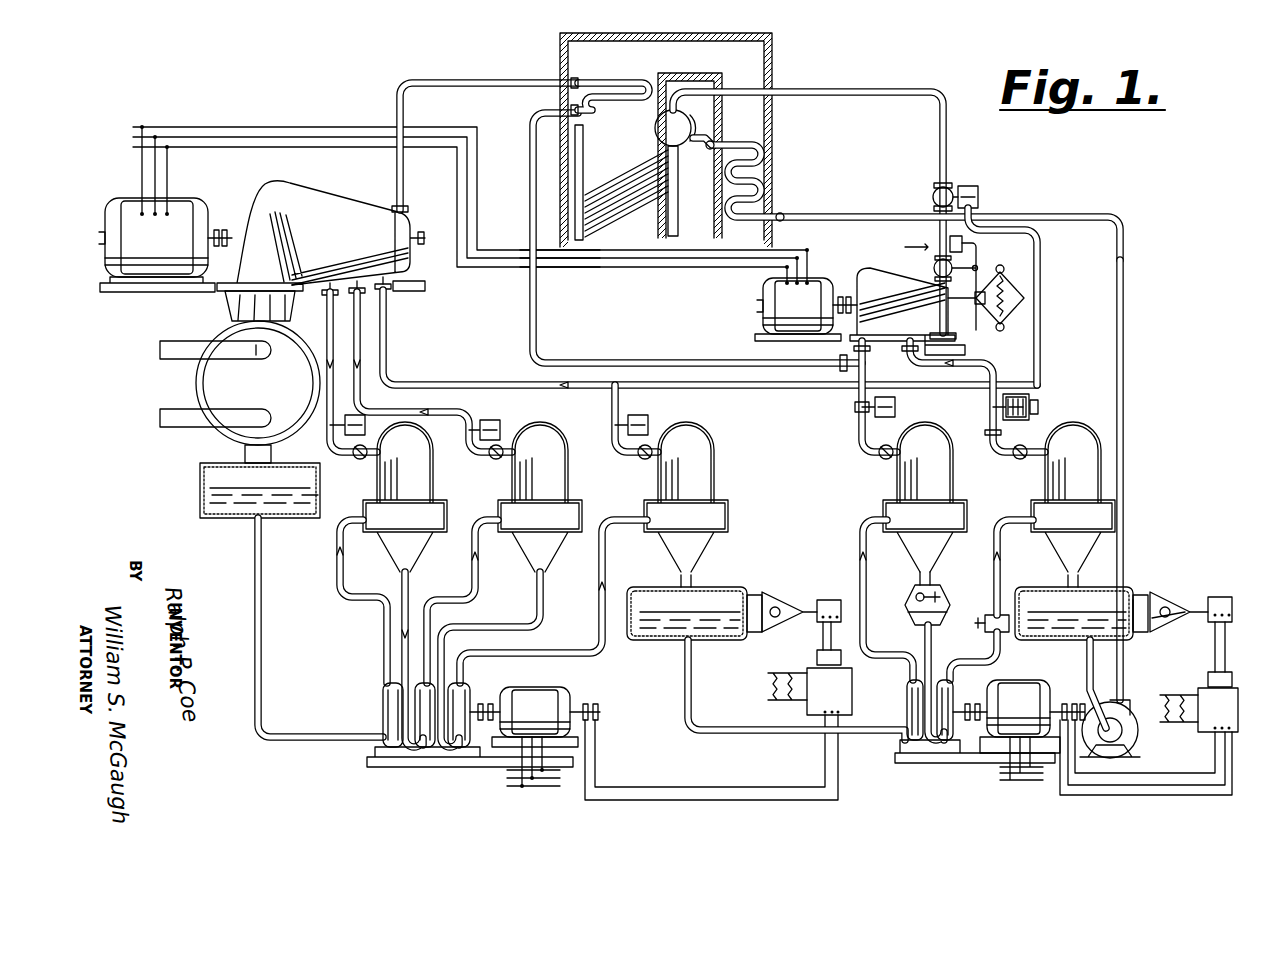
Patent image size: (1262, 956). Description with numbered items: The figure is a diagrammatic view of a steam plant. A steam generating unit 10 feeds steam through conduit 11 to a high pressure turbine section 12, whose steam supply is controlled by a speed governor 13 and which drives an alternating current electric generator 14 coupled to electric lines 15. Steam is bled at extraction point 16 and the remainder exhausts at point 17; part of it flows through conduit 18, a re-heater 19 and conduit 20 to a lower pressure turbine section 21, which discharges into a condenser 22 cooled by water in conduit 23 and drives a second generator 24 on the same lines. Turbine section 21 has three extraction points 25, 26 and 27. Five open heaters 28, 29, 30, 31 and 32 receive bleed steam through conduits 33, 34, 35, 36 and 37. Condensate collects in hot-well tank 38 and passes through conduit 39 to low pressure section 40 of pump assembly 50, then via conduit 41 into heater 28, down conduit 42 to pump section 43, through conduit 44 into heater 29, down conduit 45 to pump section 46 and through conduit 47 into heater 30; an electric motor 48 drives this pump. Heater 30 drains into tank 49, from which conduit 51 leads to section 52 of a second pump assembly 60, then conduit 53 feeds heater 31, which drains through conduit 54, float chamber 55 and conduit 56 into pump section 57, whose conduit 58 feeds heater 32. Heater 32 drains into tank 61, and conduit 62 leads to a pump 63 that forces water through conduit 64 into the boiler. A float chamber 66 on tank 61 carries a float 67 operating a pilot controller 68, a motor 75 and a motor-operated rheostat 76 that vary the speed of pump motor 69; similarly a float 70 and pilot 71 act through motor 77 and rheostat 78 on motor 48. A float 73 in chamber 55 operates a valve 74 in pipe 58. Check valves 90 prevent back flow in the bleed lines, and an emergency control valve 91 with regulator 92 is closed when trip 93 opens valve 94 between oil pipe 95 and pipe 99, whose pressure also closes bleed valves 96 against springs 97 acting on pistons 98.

The steam generating unit 10 is at (666, 140).
The conduit 11 is at (840, 91).
The high pressure turbine section 12 is at (866, 280).
The speed governor 13 is at (1006, 290).
The alternating current electric generator 14 is at (785, 308).
The electric lines 15 is at (650, 258).
The steam extraction point 16 is at (912, 330).
The high pressure turbine exhaust point 17 is at (866, 330).
The conduit 18 is at (655, 362).
The re-heater 19 is at (610, 81).
The conduit 20 is at (448, 82).
The lower pressure turbine section 21 is at (322, 205).
The condenser 22 is at (200, 372).
The conduit 23 is at (185, 425).
The alternating current electric generator 24 is at (180, 198).
The steam extraction point 25 is at (384, 276).
The steam extraction point 26 is at (356, 280).
The steam extraction point 27 is at (328, 282).
The open heater 28 is at (435, 480).
The open heater 29 is at (568, 475).
The open heater 30 is at (716, 468).
The open heater 31 is at (953, 472).
The open heater 32 is at (1090, 425).
The conduit 33 is at (975, 362).
The conduit 34 is at (865, 447).
The conduit 35 is at (412, 390).
The conduit 36 is at (362, 355).
The conduit 37 is at (335, 335).
The hot-well tank 38 is at (200, 487).
The conduit 39 is at (266, 652).
The low pressure pump section 40 is at (383, 700).
The conduit 41 is at (337, 578).
The conduit 42 is at (400, 583).
The pump section 43 is at (428, 748).
The conduit 44 is at (436, 598).
The conduit 45 is at (492, 626).
The pump section 46 is at (465, 750).
The conduit 47 is at (560, 652).
The electric motor 48 is at (545, 700).
The tank 49 is at (725, 586).
The pump assembly 50 is at (435, 758).
The conduit 51 is at (684, 688).
The pump section 52 is at (906, 703).
The conduit 53 is at (860, 568).
The conduit 54 is at (932, 578).
The float chamber 55 is at (915, 605).
The conduit 56 is at (935, 640).
The pump section 57 is at (950, 742).
The conduit 58 is at (1000, 652).
The second pump assembly 60 is at (935, 763).
The tank 61 is at (1038, 590).
The conduit 62 is at (1125, 360).
The pump 63 is at (1138, 730).
The conduit 64 is at (1048, 216).
The float chamber 66 is at (1165, 600).
The float 67 is at (1172, 620).
The pilot controller 68 is at (1220, 596).
The pump motor 69 is at (1025, 692).
The float 70 is at (778, 606).
The pilot 71 is at (829, 599).
The float 73 is at (908, 592).
The valve 74 is at (990, 614).
The motor 75 is at (1207, 677).
The motor-operated rheostat 76 is at (1210, 718).
The motor 77 is at (816, 655).
The rheostat 78 is at (806, 702).
The check valve 90 is at (886, 460).
The emergency turbine control valve 91 is at (933, 194).
The regulator 92 is at (969, 186).
The trip 93 is at (979, 247).
The valve 94 is at (949, 242).
The pipe 95 is at (935, 249).
The valve 96 is at (855, 408).
The spring 97 is at (1012, 393).
The piston 98 is at (1038, 407).
The pipe 99 is at (1003, 228).